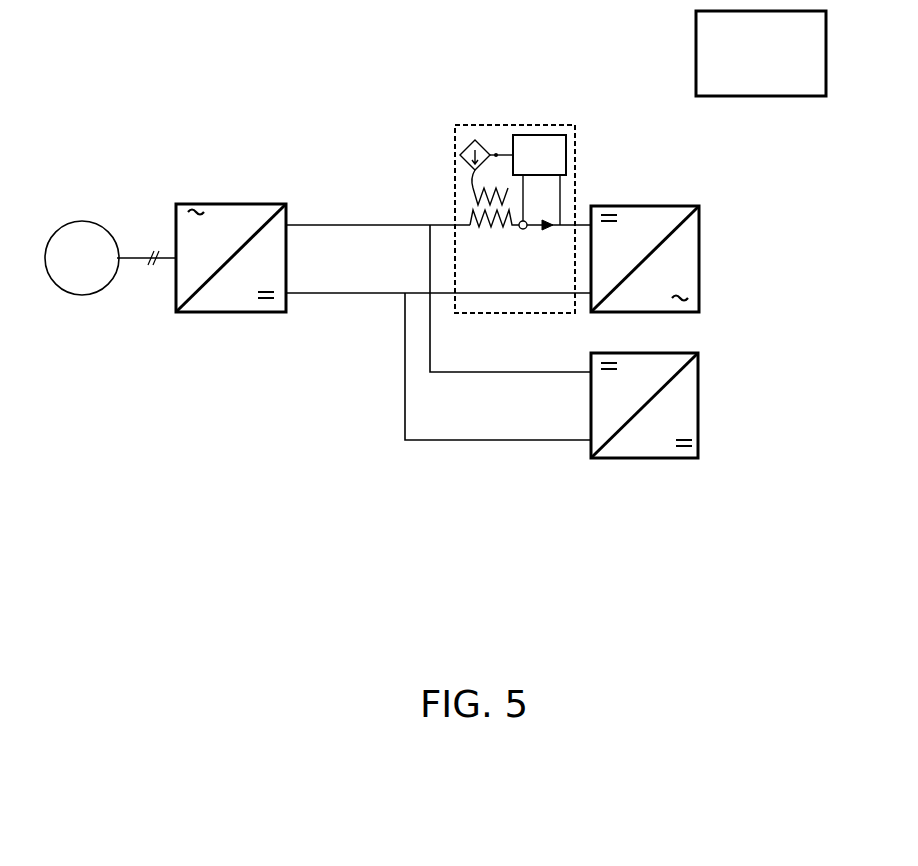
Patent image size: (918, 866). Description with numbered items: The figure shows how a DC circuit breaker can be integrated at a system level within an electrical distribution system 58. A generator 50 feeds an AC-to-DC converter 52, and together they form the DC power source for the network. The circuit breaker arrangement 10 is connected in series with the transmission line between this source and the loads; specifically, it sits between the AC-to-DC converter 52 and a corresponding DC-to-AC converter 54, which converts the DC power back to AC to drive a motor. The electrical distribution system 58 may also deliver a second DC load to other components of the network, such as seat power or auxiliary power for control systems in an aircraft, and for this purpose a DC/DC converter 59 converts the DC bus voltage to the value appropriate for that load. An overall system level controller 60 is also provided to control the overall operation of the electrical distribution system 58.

The circuit breaker arrangement 10 is at (455, 172).
The generator 50 is at (80, 220).
The AC-to-DC converter 52 is at (226, 314).
The DC-to-AC converter 54 is at (648, 204).
The electrical distribution system 58 is at (301, 464).
The DC/DC converter 59 is at (632, 462).
The system level controller 60 is at (761, 53).